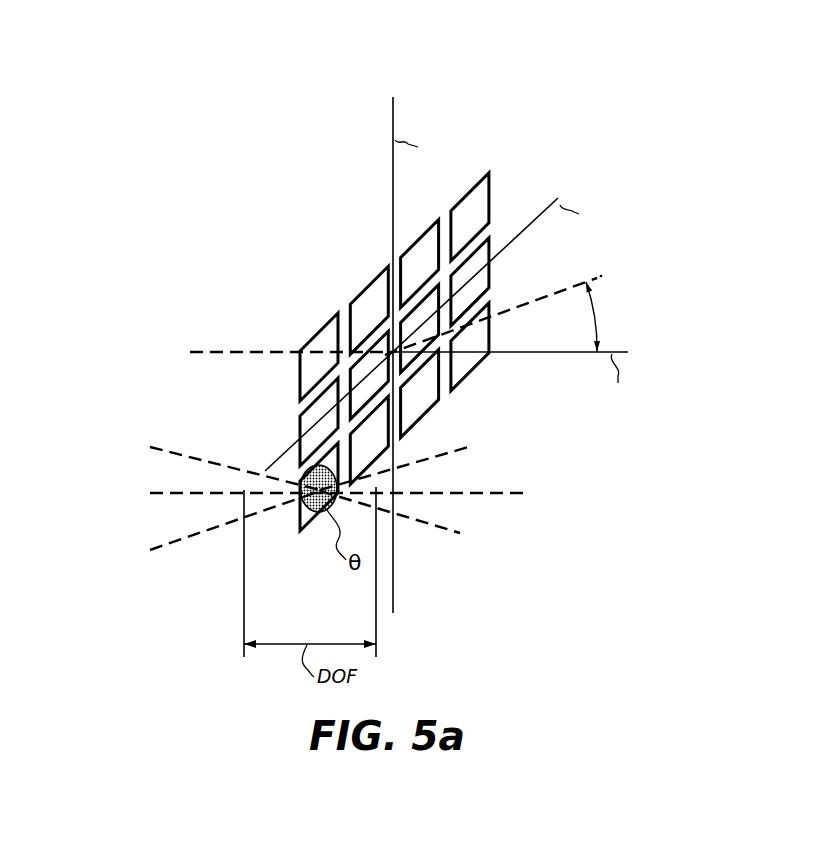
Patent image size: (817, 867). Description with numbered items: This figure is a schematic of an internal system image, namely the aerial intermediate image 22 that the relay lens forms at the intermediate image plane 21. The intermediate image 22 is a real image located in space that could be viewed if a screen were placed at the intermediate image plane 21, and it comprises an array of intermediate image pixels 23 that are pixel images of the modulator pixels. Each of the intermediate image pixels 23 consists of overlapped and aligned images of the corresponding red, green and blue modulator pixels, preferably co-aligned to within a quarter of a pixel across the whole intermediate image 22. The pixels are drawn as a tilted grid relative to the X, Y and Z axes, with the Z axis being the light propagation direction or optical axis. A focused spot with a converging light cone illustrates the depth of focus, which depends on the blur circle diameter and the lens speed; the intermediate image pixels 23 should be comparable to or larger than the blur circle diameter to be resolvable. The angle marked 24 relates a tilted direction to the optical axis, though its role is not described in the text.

The intermediate image plane 21 is at (527, 166).
The intermediate image 22 is at (240, 120).
The intermediate image pixels 23 is at (313, 335).
The tilt angle 24 is at (594, 316).